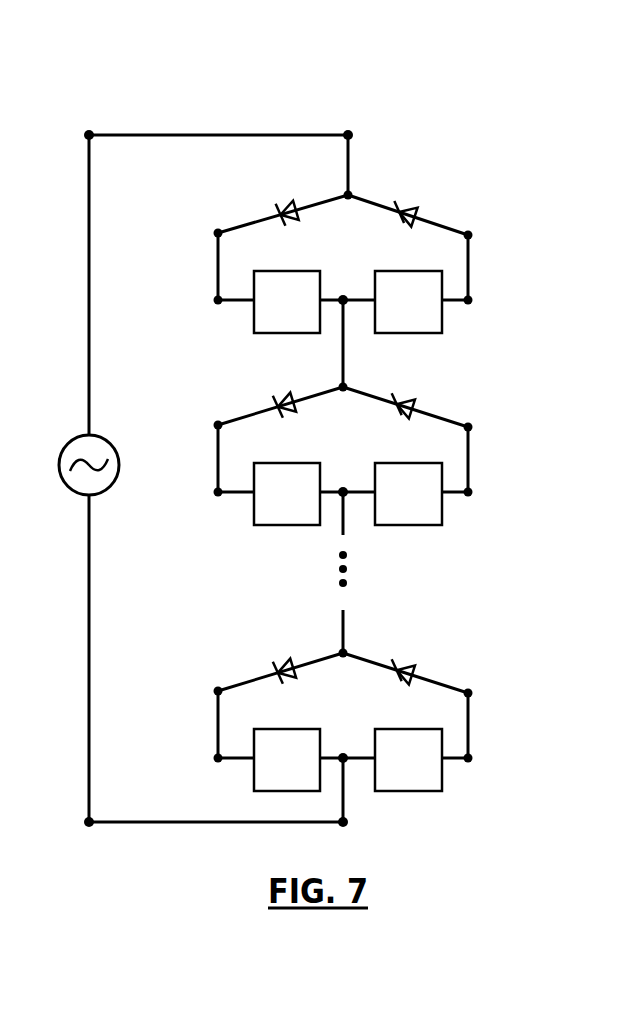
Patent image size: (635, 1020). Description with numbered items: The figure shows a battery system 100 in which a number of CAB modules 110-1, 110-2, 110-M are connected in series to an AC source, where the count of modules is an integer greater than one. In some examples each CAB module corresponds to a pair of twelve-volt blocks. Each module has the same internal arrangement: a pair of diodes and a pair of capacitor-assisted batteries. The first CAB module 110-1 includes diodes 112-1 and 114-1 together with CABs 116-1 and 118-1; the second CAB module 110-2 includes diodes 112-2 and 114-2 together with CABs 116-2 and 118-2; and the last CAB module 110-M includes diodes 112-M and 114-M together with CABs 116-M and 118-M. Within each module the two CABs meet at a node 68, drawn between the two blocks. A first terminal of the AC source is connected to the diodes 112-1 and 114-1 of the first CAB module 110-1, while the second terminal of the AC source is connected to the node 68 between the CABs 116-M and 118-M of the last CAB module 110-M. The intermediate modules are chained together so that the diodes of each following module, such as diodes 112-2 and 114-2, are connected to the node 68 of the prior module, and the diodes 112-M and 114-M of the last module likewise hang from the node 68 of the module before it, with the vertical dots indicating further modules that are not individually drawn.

The battery system 100 is at (405, 88).
The CAB module 110-1 is at (405, 178).
The CAB module 110-2 is at (405, 372).
The CAB module 110-M is at (405, 635).
The diode 112-1 is at (283, 200).
The diode 112-2 is at (283, 394).
The diode 112-M is at (283, 658).
The diode 114-1 is at (404, 206).
The diode 114-2 is at (404, 400).
The diode 114-M is at (404, 665).
The CAB 116-1 is at (253, 313).
The CAB 116-2 is at (253, 508).
The CAB 116-M is at (253, 771).
The CAB 118-1 is at (442, 308).
The CAB 118-2 is at (442, 500).
The CAB 118-M is at (442, 766).
The node 68 is at (343, 292).